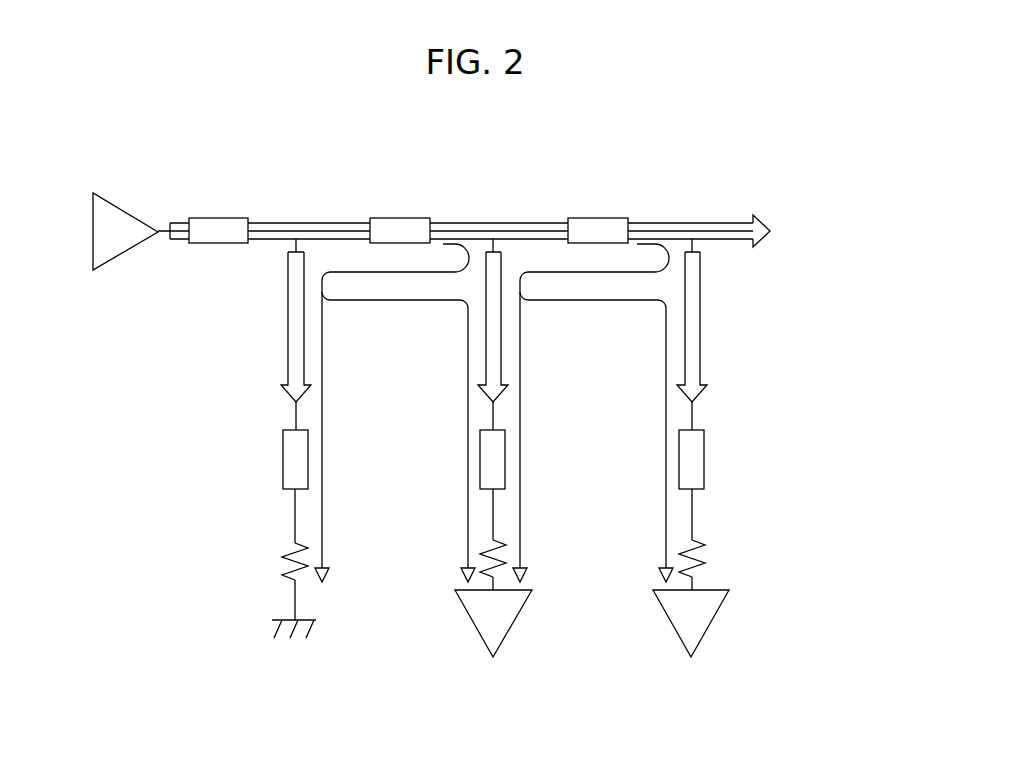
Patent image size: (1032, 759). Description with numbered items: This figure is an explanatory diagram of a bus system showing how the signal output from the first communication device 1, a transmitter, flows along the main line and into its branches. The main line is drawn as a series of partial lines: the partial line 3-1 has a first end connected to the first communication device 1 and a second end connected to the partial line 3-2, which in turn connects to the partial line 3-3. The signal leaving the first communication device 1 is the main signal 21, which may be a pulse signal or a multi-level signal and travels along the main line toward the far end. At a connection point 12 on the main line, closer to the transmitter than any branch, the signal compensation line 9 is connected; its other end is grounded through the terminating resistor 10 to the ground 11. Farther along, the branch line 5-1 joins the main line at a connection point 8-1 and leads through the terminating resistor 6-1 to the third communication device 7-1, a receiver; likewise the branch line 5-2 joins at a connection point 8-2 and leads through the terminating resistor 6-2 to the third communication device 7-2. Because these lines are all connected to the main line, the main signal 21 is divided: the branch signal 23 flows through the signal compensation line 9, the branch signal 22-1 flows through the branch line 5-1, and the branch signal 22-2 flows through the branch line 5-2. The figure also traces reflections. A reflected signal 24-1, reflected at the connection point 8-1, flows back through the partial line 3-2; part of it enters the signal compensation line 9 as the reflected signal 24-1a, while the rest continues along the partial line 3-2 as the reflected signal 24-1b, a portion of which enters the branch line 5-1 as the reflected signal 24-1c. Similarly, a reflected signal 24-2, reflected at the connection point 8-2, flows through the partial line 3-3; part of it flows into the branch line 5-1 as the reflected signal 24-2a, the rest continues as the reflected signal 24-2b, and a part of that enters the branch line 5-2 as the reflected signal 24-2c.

The first communication device 1 is at (118, 208).
The main signal 21 is at (737, 241).
The partial line 3-1 is at (218, 218).
The partial line 3-2 is at (388, 218).
The partial line 3-3 is at (590, 218).
The connection point 12 is at (297, 218).
The branch signal 23 is at (288, 333).
The signal compensation line 9 is at (291, 430).
The terminating resistor 10 is at (290, 546).
The ground 11 is at (272, 624).
The reflected signal 24-1 is at (435, 272).
The reflected signal 24-1a is at (324, 462).
The reflected signal 24-1b is at (331, 301).
The reflected signal 24-1c is at (466, 511).
The connection point 8-1 is at (493, 218).
The branch signal 22-1 is at (486, 352).
The branch line 5-1 is at (506, 458).
The terminating resistor 6-1 is at (482, 544).
The third communication device 7-1 is at (478, 640).
The reflected signal 24-2 is at (633, 272).
The reflected signal 24-2a is at (521, 497).
The reflected signal 24-2b is at (529, 301).
The reflected signal 24-2c is at (664, 395).
The connection point 8-2 is at (692, 218).
The branch signal 22-2 is at (700, 348).
The branch line 5-2 is at (705, 458).
The terminating resistor 6-2 is at (700, 576).
The third communication device 7-2 is at (678, 640).